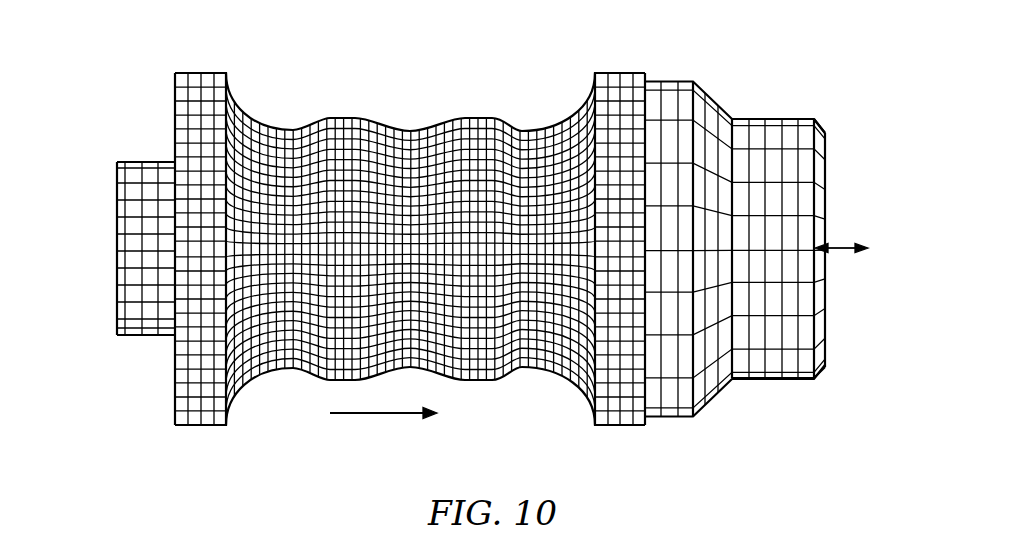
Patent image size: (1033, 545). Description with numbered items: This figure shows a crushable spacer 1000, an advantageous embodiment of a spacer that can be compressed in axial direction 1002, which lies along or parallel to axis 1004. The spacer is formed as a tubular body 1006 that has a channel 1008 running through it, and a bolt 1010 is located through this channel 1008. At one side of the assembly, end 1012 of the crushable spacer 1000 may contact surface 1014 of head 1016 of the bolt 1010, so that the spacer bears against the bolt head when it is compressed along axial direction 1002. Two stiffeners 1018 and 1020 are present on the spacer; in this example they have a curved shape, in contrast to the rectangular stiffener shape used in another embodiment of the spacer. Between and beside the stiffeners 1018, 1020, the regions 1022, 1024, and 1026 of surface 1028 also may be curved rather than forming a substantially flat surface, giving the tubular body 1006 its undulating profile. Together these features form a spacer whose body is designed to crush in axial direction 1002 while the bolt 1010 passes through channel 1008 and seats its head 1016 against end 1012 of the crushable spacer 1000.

The crushable spacer 1000 is at (814, 62).
The axial direction 1002 is at (383, 438).
The axis 1004 is at (860, 246).
The tubular body 1006 is at (598, 426).
The channel 1008 is at (117, 313).
The bolt 1010 is at (757, 118).
The end 1012 is at (650, 376).
The surface 1014 is at (650, 393).
The head 1016 is at (788, 379).
The stiffener 1018 is at (343, 116).
The stiffener 1020 is at (478, 116).
The region 1022 is at (317, 97).
The region 1024 is at (445, 97).
The region 1026 is at (575, 97).
The surface 1028 is at (634, 72).